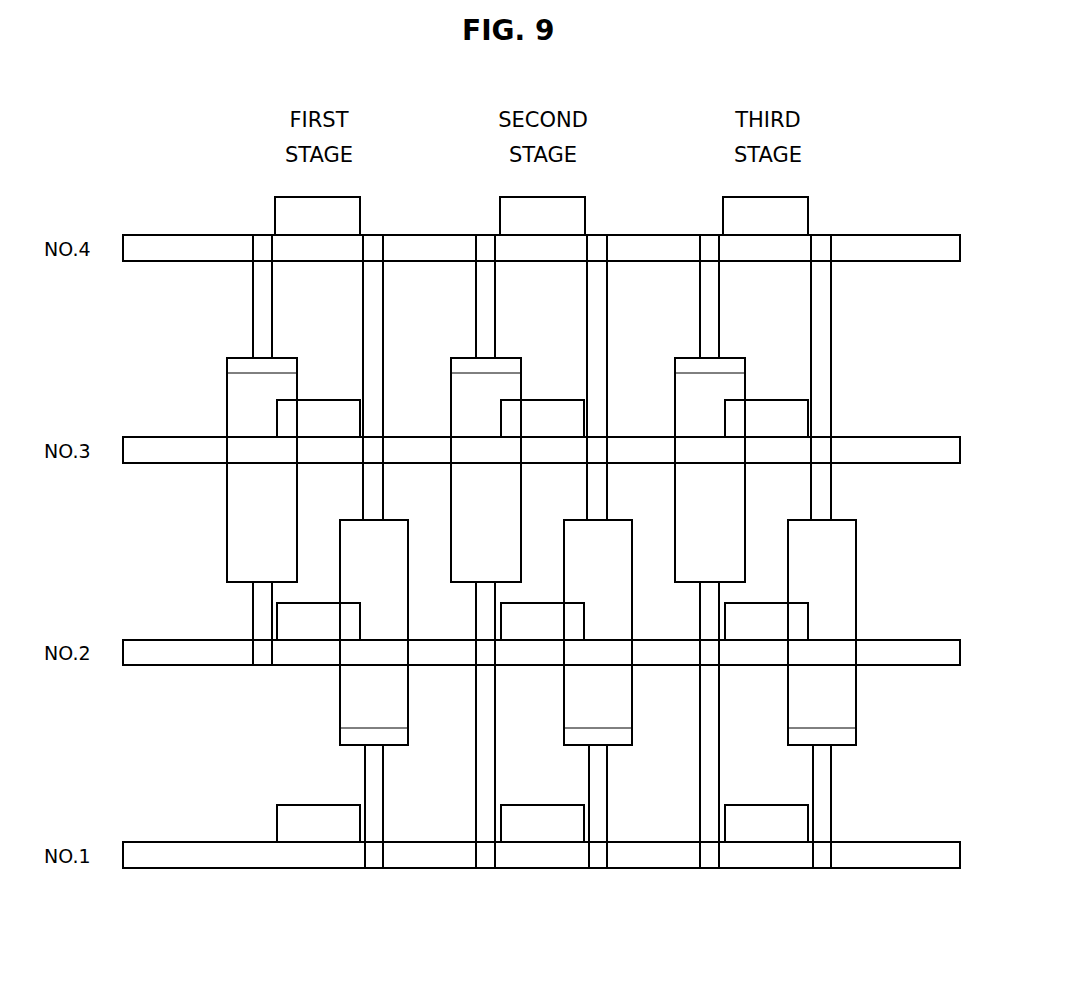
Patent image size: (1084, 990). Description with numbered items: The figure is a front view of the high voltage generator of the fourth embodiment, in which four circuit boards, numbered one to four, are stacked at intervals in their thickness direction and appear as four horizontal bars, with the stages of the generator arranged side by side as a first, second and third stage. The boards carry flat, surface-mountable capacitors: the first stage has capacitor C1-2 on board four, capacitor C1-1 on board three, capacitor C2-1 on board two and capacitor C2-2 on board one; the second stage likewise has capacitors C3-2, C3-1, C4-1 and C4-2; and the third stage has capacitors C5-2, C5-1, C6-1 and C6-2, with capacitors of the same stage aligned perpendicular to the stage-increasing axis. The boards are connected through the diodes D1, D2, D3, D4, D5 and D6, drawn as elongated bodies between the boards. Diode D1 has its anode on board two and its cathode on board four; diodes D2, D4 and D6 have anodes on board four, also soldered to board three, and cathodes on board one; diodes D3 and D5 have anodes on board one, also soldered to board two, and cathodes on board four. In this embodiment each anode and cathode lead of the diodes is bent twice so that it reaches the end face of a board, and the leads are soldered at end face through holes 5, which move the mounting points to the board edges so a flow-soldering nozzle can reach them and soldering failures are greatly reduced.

The end face through hole 5 is at (252, 245).
The diode D1 is at (273, 470).
The diode D2 is at (386, 632).
The diode D3 is at (497, 470).
The diode D4 is at (610, 632).
The diode D5 is at (721, 470).
The diode D6 is at (834, 632).
The capacitor C1-1 is at (318, 407).
The capacitor C1-2 is at (317, 206).
The capacitor C2-1 is at (318, 608).
The capacitor C2-2 is at (318, 812).
The capacitor C3-1 is at (542, 407).
The capacitor C3-2 is at (542, 206).
The capacitor C4-1 is at (542, 608).
The capacitor C4-2 is at (542, 812).
The capacitor C5-1 is at (766, 407).
The capacitor C5-2 is at (765, 206).
The capacitor C6-1 is at (766, 608).
The capacitor C6-2 is at (766, 812).